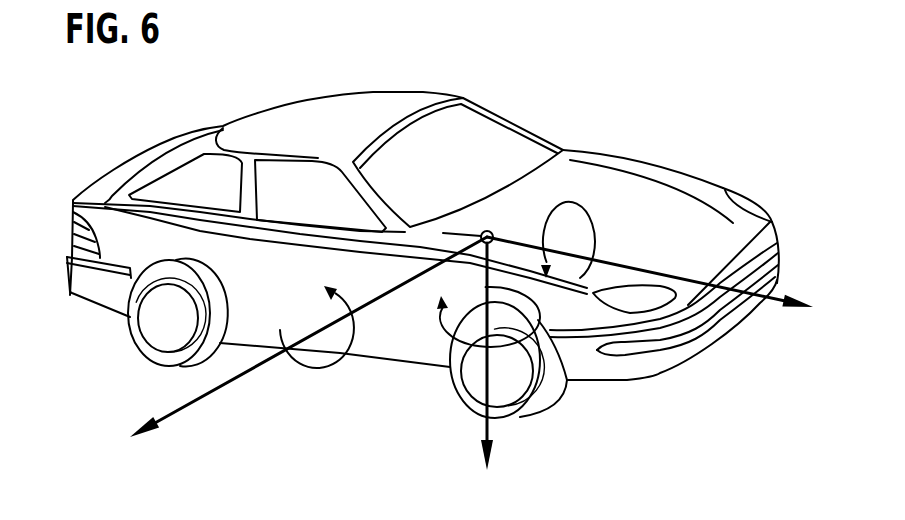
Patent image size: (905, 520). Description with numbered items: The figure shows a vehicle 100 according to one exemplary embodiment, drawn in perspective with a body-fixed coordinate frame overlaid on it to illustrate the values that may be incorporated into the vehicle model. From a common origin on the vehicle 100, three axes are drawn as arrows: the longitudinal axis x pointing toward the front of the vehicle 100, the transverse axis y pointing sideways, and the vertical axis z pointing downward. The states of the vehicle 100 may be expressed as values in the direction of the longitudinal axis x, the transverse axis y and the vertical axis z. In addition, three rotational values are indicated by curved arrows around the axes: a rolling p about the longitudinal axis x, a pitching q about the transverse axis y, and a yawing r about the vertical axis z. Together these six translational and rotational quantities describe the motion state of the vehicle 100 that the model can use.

The vehicle 100 is at (425, 92).
The longitudinal axis x is at (660, 279).
The transverse axis y is at (298, 341).
The vertical axis z is at (488, 370).
The rolling p is at (568, 240).
The pitching q is at (317, 327).
The yawing r is at (488, 310).